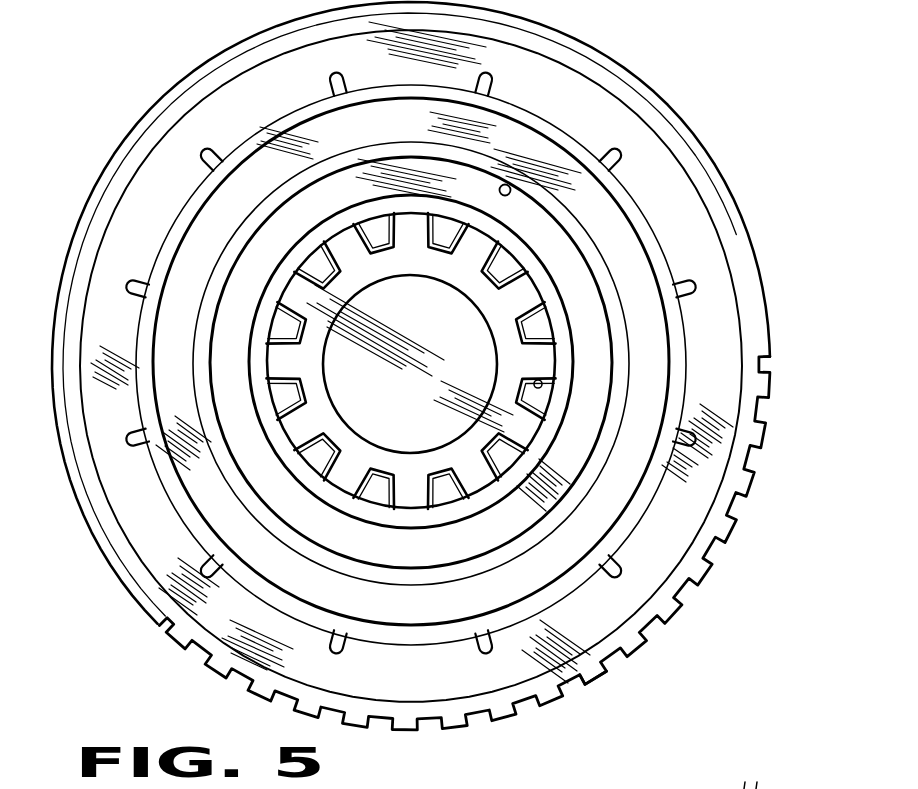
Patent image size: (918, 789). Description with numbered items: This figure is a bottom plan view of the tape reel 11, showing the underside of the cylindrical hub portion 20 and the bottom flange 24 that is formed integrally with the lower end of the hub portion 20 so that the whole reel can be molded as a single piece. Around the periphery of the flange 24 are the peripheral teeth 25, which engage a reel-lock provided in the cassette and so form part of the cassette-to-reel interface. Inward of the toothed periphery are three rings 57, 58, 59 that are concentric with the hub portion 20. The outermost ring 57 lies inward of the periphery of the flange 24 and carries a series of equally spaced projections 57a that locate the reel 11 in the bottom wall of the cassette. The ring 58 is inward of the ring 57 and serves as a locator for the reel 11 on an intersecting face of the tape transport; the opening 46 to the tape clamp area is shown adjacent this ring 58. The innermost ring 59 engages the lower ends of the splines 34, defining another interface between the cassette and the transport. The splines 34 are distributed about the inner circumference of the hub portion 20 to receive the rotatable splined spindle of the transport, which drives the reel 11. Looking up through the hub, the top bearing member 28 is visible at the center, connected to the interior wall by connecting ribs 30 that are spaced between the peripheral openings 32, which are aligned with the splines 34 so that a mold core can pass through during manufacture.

The reel 11 is at (700, 608).
The hub portion 20 is at (748, 206).
The bottom flange 24 is at (623, 607).
The peripheral teeth 25 is at (593, 678).
The top bearing member 28 is at (432, 332).
The connecting ribs 30 is at (473, 243).
The peripheral openings 32 is at (538, 380).
The splines 34 is at (507, 265).
The opening 46 is at (509, 187).
The ring 57 is at (428, 84).
The projections 57a is at (492, 80).
The ring 58 is at (302, 168).
The ring 59 is at (328, 232).